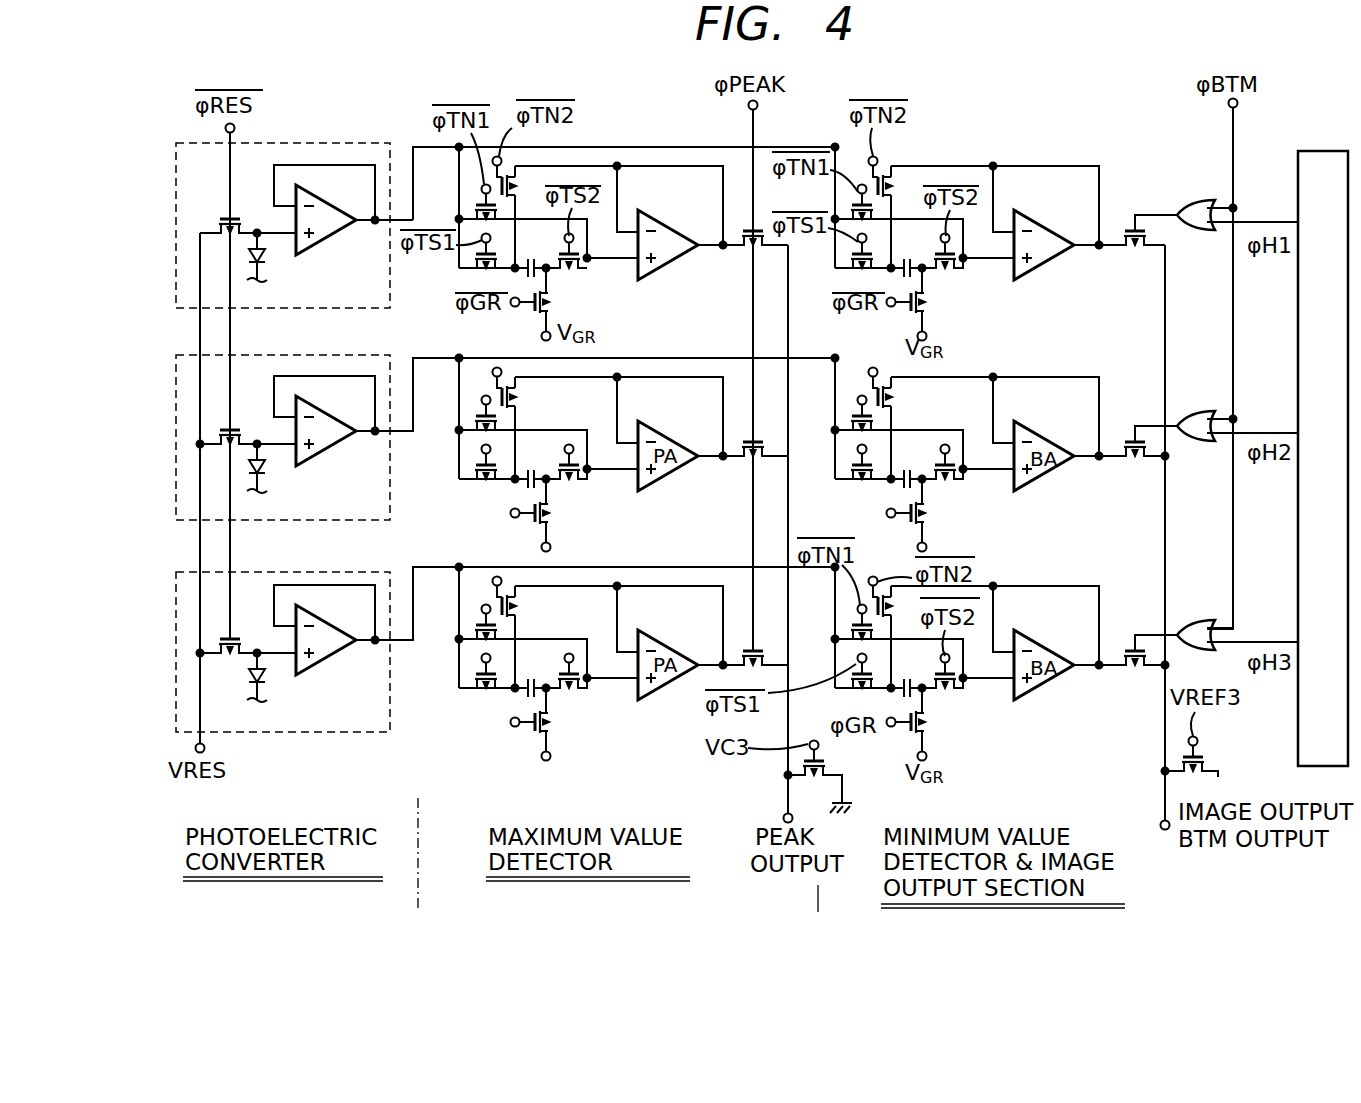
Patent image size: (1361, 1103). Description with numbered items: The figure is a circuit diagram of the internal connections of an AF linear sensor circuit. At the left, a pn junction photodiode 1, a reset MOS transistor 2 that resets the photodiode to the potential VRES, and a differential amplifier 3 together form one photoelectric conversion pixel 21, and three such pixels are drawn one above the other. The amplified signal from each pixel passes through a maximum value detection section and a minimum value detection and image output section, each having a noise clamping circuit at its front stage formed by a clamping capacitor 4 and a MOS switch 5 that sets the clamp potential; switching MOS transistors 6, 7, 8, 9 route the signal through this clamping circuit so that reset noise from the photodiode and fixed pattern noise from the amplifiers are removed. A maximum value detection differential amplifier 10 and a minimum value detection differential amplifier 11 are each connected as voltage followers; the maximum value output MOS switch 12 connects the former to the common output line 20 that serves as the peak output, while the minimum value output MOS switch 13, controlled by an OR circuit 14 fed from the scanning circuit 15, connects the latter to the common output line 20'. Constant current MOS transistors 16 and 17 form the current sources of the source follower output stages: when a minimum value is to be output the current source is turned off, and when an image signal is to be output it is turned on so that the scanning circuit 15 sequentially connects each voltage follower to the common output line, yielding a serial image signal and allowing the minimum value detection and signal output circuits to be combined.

The pn junction photodiode 1 is at (262, 262).
The reset MOS transistor 2 is at (222, 215).
The differential amplifier 3 is at (332, 245).
The clamping capacitor 4 is at (534, 262).
The MOS switch for setting a clamp potential 5 is at (533, 312).
The switching MOS transistor 6 is at (476, 212).
The switching MOS transistor 7 is at (522, 188).
The switching MOS transistor 8 is at (462, 264).
The switching MOS transistor 9 is at (580, 272).
The maximum value detection differential amplifier 10 is at (668, 266).
The minimum value detection differential amplifier 11 is at (1044, 268).
The maximum value output MOS switch 12 is at (748, 250).
The minimum value output MOS switch 13 is at (1134, 230).
The OR circuit 14 is at (1200, 200).
The scanning circuit 15 is at (1326, 150).
The constant current MOS transistor 16 is at (830, 768).
The constant current MOS transistor 17 is at (1208, 757).
The common output line 20 is at (815, 534).
The common output line 20' is at (1197, 537).
The photoelectric conversion pixel 21 is at (343, 142).